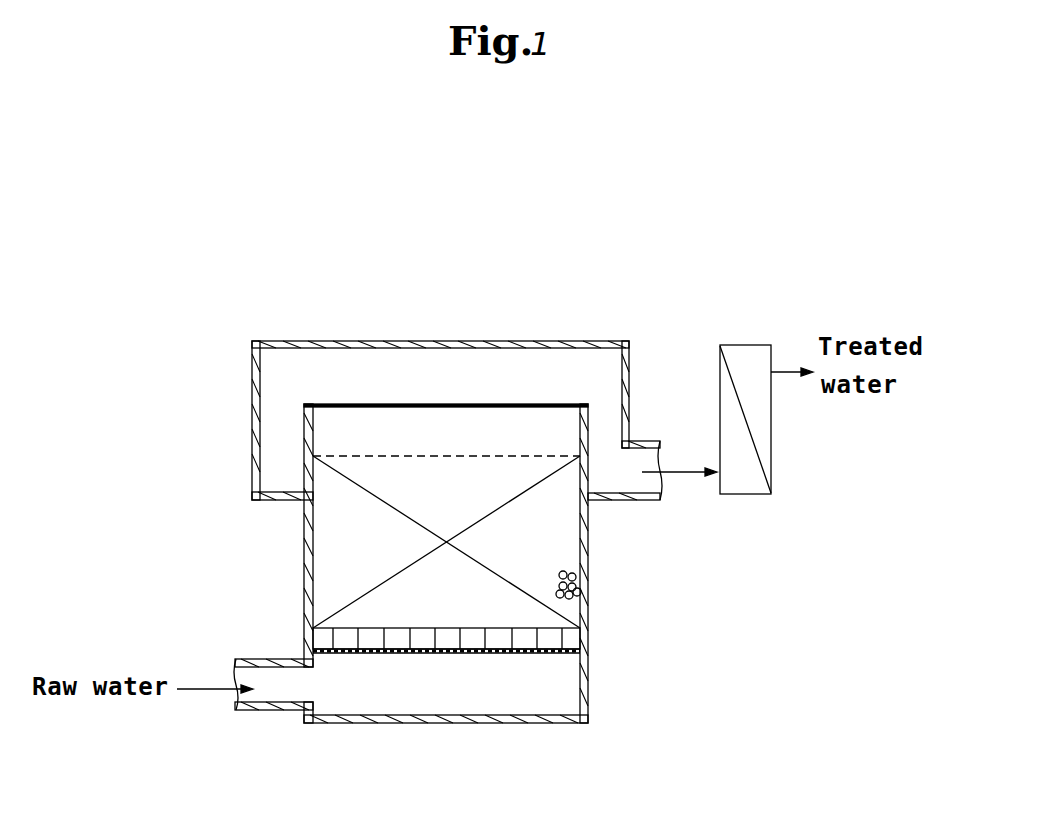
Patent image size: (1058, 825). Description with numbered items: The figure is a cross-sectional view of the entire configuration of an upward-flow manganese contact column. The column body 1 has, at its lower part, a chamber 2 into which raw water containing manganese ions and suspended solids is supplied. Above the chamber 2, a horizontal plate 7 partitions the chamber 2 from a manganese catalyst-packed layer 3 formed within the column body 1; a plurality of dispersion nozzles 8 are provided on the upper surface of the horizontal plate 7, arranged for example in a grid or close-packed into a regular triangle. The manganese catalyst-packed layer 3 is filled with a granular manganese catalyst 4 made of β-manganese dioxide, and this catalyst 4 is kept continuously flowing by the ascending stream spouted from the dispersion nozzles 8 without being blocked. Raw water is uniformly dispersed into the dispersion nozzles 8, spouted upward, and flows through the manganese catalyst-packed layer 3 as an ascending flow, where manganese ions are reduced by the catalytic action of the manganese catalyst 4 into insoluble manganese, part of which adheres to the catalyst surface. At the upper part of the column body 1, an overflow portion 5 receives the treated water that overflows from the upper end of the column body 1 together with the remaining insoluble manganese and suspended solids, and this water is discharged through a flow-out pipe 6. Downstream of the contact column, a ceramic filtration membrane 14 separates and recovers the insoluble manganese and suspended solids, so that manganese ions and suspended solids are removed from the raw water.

The column body 1 is at (587, 555).
The chamber 2 is at (560, 686).
The manganese catalyst-packed layer 3 is at (330, 565).
The granular manganese catalyst 4 is at (578, 598).
The overflow portion 5 is at (277, 455).
The flow-out pipe 6 is at (643, 460).
The horizontal plate 7 is at (444, 653).
The dispersion nozzles 8 is at (422, 640).
The ceramic filtration membrane 14 is at (755, 445).